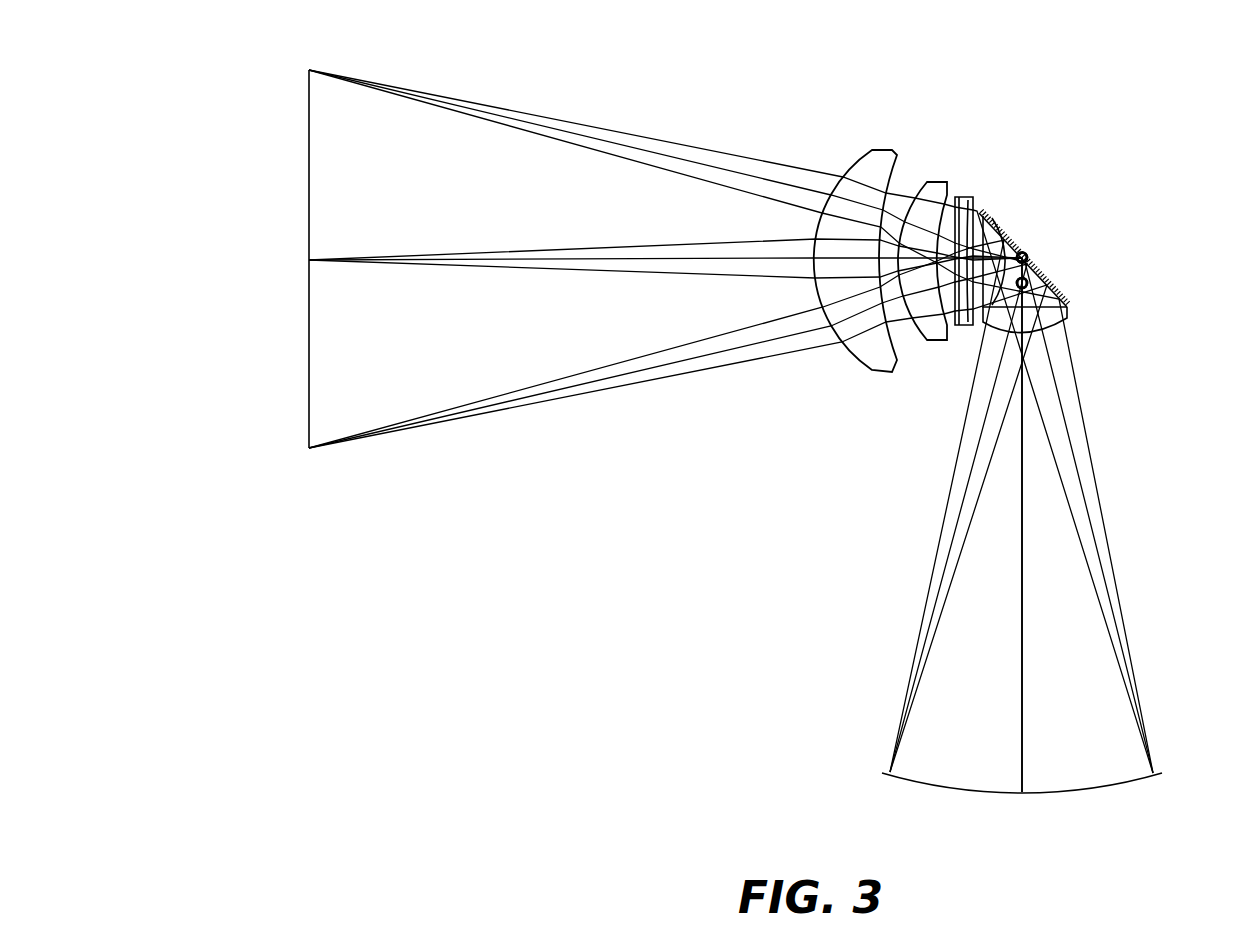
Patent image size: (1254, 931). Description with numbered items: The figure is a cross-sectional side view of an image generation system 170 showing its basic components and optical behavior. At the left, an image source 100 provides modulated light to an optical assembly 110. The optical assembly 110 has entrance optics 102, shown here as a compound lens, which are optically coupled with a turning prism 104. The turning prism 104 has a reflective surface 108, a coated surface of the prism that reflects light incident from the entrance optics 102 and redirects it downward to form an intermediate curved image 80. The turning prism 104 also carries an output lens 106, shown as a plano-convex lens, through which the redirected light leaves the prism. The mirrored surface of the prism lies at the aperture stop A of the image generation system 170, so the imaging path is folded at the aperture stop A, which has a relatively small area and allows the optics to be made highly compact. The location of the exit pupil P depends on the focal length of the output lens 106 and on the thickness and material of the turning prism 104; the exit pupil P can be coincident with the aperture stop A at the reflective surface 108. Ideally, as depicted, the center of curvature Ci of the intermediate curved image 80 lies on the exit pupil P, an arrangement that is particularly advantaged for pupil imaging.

The image source 100 is at (307, 397).
The entrance optics 102 is at (910, 125).
The turning prism 104 is at (1028, 280).
The output lens 106 is at (1066, 320).
The reflective surface 108 is at (1032, 291).
The optical assembly 110 is at (1172, 143).
The image generation system 170 is at (532, 586).
The intermediate curved image 80 is at (917, 783).
The aperture stop A is at (1026, 253).
The center of curvature Ci is at (1027, 255).
The exit pupil P is at (1064, 274).